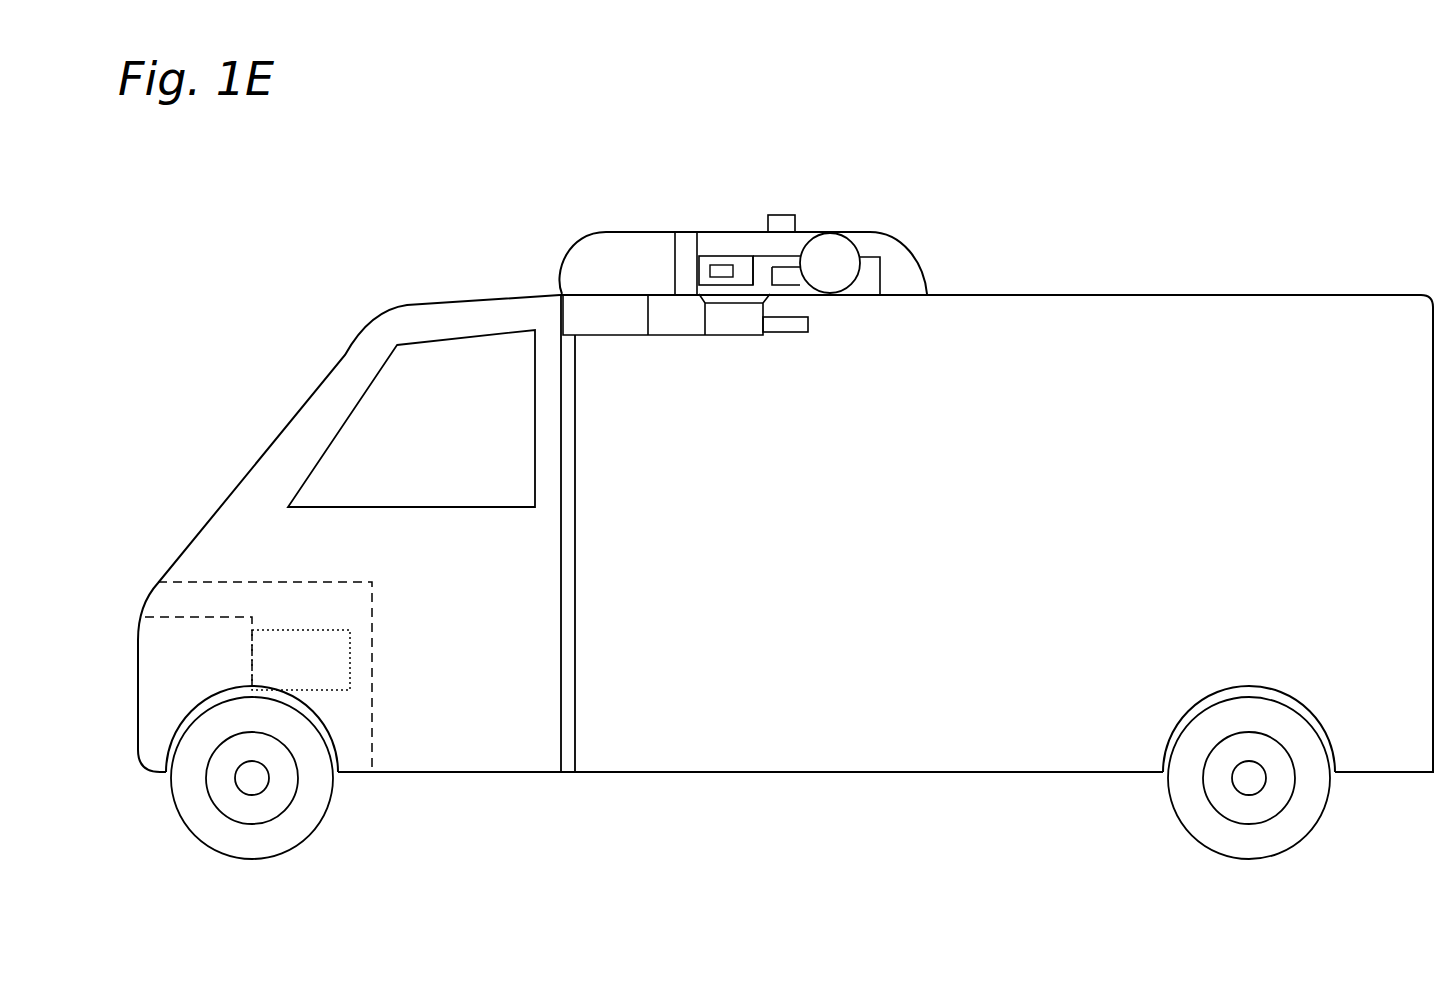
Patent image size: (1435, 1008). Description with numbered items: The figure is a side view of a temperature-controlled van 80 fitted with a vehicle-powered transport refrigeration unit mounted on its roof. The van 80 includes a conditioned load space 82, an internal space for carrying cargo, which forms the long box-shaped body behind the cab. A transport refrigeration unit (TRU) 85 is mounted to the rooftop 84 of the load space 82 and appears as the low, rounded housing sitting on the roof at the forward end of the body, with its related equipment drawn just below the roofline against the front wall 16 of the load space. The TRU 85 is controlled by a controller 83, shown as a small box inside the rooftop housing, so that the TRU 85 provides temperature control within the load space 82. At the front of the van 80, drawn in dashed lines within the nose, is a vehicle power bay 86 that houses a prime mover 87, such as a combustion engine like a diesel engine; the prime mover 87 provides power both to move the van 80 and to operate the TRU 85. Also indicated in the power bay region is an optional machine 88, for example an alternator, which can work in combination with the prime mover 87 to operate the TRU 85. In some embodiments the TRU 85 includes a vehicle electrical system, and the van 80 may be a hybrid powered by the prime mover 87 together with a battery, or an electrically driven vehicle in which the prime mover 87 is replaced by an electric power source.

The temperature-controlled van 80 is at (293, 323).
The conditioned load space 82 is at (1300, 330).
The rooftop 84 is at (1113, 294).
The transport refrigeration unit 85 is at (900, 248).
The controller 83 is at (722, 258).
The front wall 16 is at (660, 308).
The vehicle power bay 86 is at (207, 580).
The prime mover 87 is at (172, 616).
The optional machine 88 is at (370, 682).